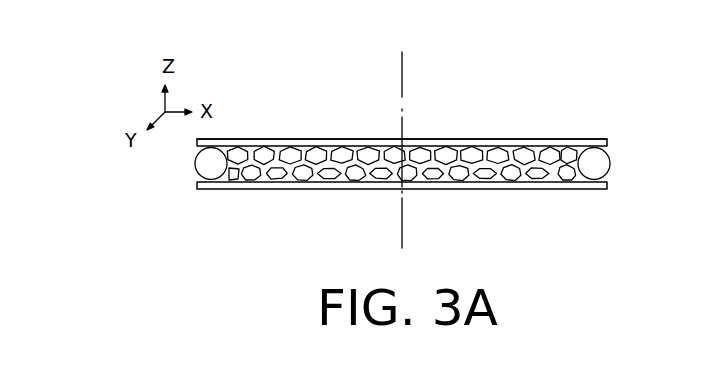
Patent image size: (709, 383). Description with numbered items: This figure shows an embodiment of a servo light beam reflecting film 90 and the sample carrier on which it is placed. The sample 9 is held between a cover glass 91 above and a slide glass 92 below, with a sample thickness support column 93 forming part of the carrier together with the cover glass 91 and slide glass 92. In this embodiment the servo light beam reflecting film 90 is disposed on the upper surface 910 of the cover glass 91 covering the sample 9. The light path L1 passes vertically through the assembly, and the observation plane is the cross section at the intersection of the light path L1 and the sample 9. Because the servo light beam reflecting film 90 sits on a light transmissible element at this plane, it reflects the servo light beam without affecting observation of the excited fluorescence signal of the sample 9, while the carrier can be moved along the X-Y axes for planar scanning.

The servo light beam reflecting film 90 is at (442, 157).
The cover glass 91 is at (273, 145).
The upper surface of cover glass 910 is at (548, 138).
The slide glass 92 is at (500, 182).
The sample thickness support column 93 is at (595, 163).
The sample 9 is at (337, 160).
The light path L1 is at (403, 92).